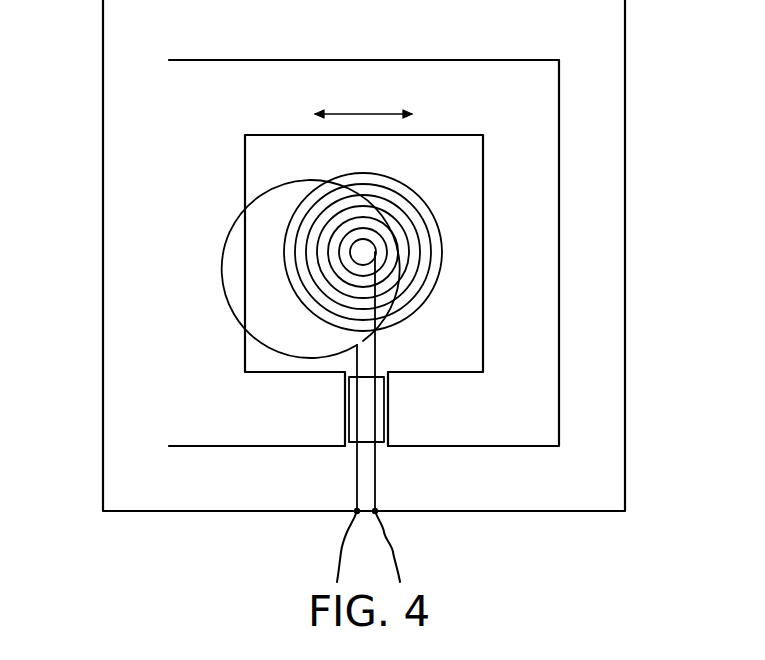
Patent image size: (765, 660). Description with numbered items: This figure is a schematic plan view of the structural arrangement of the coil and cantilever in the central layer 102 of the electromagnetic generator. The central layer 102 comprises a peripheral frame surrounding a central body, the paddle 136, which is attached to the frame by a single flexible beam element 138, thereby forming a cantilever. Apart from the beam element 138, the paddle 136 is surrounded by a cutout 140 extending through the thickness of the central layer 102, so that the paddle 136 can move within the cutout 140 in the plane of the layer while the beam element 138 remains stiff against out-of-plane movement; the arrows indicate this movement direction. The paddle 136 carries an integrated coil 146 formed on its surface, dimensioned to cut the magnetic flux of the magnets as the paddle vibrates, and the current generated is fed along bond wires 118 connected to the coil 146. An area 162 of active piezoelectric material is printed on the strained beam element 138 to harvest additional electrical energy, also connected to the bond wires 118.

The central layer 102 is at (625, 72).
The central paddle 136 is at (108, 93).
The cutout 140 is at (182, 289).
The integrated coil 146 is at (403, 168).
The area of active piezoelectric material 162 is at (349, 408).
The beam element 138 is at (390, 407).
The bond wires 118 is at (340, 558).